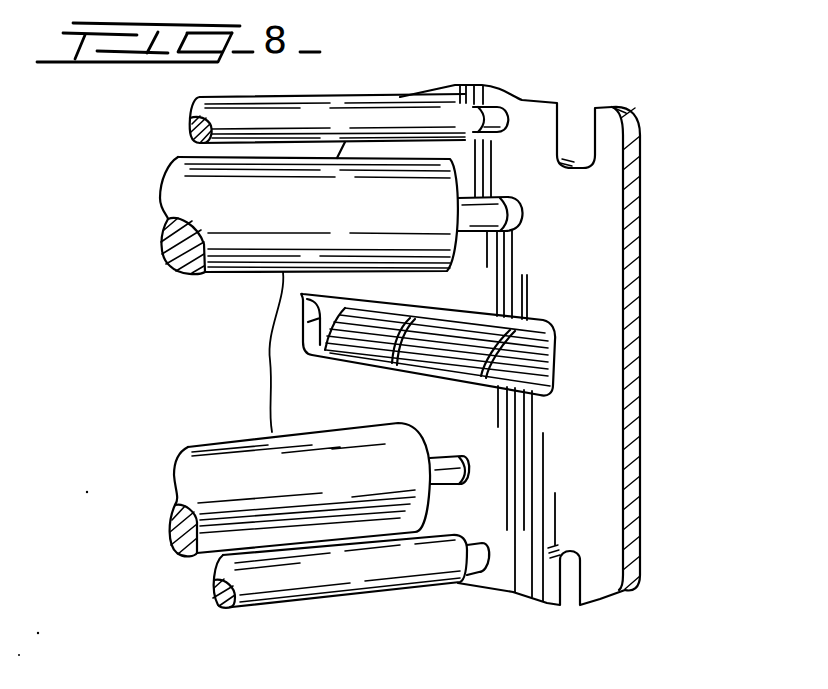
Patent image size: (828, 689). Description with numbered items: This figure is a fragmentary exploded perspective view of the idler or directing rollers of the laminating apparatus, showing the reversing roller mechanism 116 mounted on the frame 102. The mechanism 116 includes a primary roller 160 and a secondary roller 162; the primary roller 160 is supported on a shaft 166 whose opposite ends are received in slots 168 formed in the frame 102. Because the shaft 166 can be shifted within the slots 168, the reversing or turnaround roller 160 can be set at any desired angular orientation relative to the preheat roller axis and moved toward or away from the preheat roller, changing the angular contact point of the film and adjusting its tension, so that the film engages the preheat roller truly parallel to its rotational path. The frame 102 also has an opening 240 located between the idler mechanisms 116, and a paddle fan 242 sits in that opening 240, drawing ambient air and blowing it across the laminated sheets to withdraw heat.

The frame 102 is at (600, 245).
The reversing roller mechanism 116 is at (133, 193).
The primary roller 160 is at (221, 263).
The secondary roller 162 is at (298, 103).
The shaft 166 is at (466, 200).
The slots 168 is at (500, 203).
The opening 240 is at (302, 327).
The paddle fan 242 is at (553, 368).